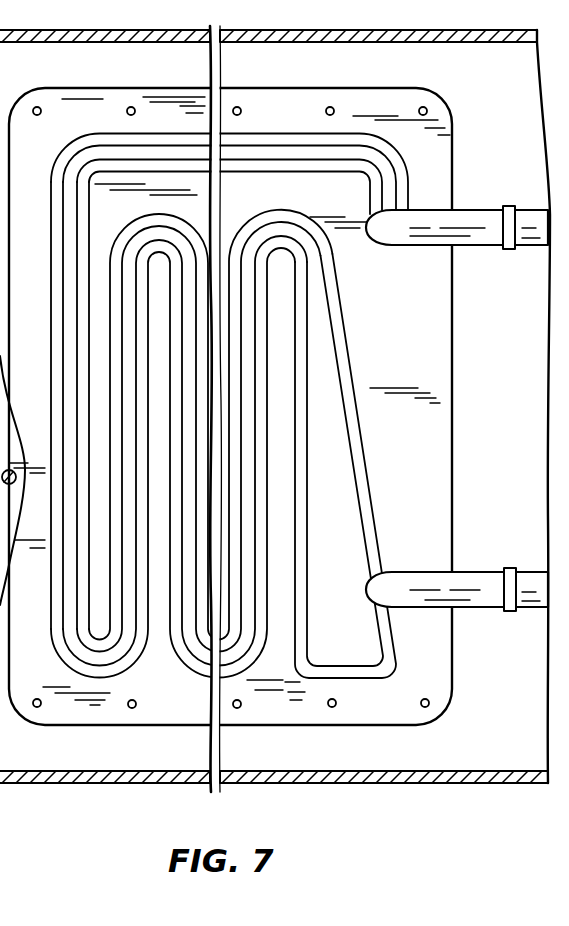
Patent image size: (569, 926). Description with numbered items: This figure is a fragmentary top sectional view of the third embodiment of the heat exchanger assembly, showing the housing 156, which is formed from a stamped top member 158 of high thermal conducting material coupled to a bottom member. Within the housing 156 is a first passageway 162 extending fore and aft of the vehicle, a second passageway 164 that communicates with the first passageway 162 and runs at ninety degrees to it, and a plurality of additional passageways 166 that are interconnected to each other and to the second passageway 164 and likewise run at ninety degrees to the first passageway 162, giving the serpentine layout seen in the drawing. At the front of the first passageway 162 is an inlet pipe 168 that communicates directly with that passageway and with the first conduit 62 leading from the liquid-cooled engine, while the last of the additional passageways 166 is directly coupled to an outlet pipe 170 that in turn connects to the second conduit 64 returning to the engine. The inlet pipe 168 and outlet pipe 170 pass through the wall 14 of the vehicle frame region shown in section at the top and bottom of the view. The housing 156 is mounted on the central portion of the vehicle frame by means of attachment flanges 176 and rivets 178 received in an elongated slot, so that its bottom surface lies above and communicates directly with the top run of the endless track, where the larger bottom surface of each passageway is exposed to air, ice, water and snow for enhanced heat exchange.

The wall 14 is at (290, 26).
The first conduit 62 is at (531, 207).
The second conduit 64 is at (533, 563).
The housing 156 is at (466, 333).
The top member 158 is at (424, 374).
The first passageway 162 is at (262, 148).
The second passageway 164 is at (66, 266).
The additional passageways 166 is at (363, 429).
The inlet pipe 168 is at (492, 193).
The outlet pipe 170 is at (481, 578).
The attachment flanges 176 is at (96, 112).
The rivets 178 is at (40, 106).